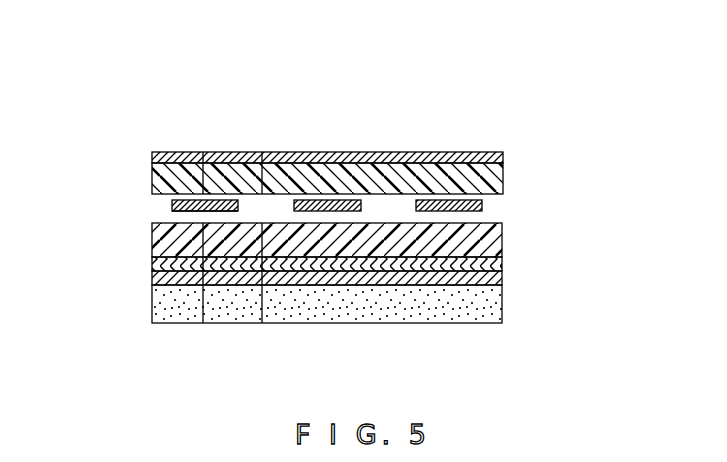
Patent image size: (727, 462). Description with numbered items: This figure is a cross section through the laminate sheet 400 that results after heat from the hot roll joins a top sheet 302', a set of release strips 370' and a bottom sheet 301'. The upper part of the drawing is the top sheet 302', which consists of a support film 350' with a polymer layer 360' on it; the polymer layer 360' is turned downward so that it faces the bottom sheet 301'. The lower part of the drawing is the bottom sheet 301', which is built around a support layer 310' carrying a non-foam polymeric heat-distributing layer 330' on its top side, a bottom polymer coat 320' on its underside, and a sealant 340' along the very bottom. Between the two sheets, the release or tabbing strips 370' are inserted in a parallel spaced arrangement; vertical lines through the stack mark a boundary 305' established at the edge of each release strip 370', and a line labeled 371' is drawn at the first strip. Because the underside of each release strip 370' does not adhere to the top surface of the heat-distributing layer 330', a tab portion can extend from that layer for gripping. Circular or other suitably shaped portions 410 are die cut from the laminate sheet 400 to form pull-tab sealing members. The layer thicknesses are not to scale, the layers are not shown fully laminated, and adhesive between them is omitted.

The laminate sheet 400 is at (305, 199).
The top sheet 302' is at (329, 129).
The bottom sheet 301' is at (329, 296).
The boundary 305' is at (183, 129).
The circular portions 410 is at (244, 152).
The support film 350' is at (348, 127).
The polymer layer 360' is at (370, 159).
The release strips 370' is at (304, 193).
The pad lower surface 371' is at (143, 214).
The heat-distributing layer 330' is at (371, 239).
The support layer 310' is at (371, 275).
The bottom polymer coat 320' is at (371, 299).
The sealant 340' is at (371, 327).